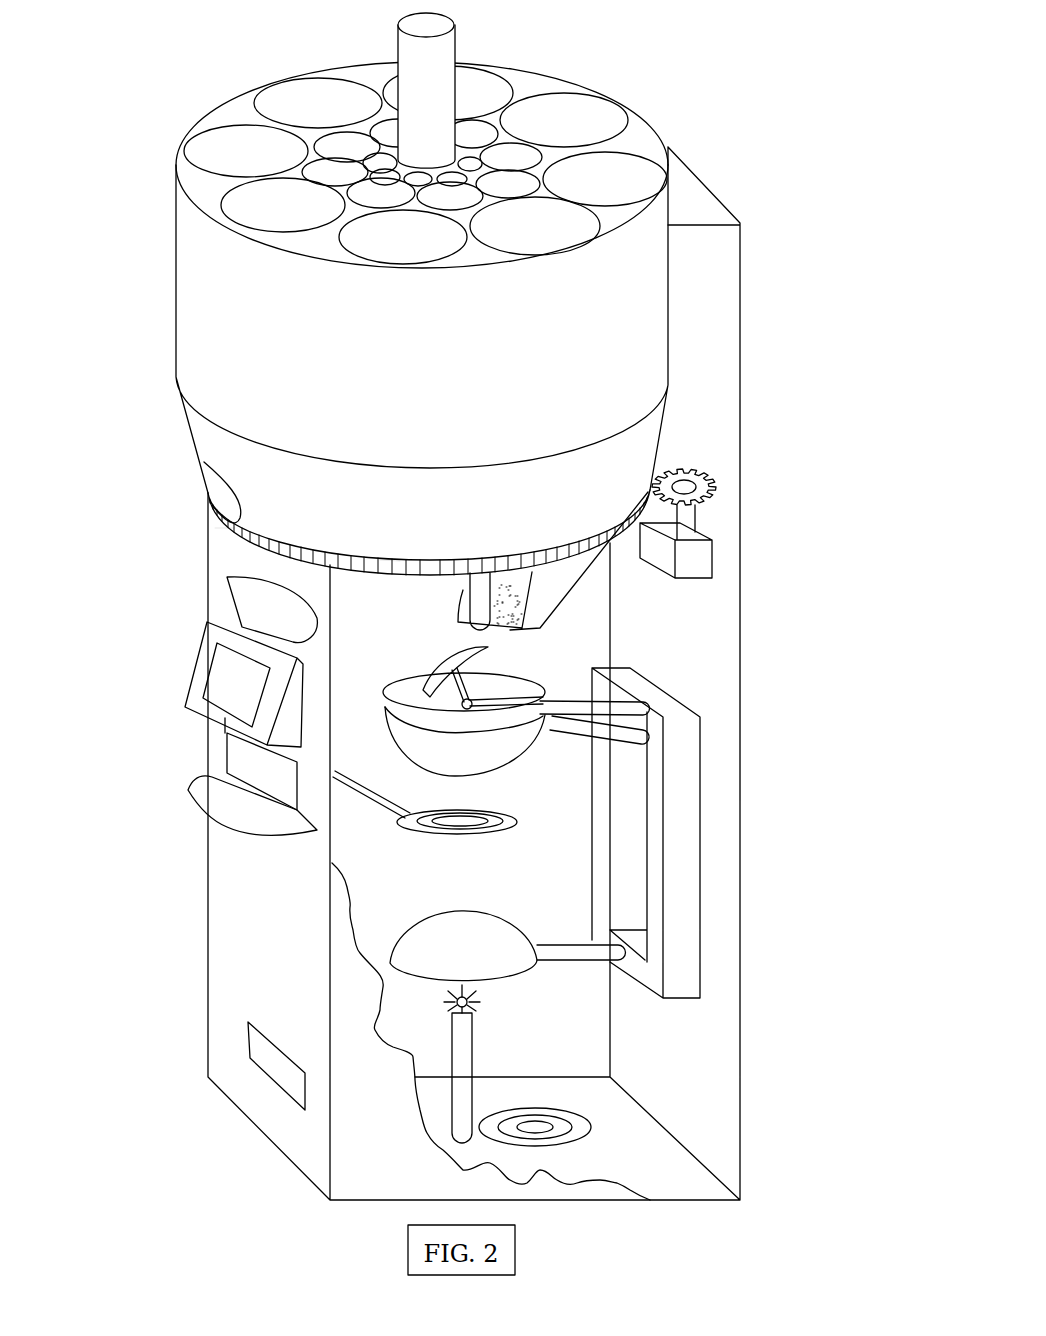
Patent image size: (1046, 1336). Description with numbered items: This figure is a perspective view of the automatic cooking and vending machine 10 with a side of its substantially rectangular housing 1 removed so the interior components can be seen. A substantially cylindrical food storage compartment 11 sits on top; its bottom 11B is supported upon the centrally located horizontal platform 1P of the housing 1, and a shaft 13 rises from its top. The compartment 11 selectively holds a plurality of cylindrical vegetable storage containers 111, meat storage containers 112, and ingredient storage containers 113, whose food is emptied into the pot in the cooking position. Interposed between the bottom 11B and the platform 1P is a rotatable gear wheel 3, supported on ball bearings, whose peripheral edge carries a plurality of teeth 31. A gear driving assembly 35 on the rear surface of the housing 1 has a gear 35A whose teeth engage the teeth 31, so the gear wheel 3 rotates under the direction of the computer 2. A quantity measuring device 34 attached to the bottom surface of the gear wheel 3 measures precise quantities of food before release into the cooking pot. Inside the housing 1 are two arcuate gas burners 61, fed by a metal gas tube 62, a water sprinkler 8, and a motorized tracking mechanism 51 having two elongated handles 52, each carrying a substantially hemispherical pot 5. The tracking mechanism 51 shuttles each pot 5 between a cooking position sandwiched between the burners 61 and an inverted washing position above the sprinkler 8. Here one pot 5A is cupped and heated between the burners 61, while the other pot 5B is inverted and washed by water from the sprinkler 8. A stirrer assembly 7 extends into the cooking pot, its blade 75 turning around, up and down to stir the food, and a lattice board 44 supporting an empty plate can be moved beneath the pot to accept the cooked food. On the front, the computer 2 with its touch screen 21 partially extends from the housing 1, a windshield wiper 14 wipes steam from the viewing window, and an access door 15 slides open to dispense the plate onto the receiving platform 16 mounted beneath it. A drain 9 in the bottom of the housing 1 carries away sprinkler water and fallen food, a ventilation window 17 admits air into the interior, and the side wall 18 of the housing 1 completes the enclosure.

The housing 1 is at (245, 921).
The horizontal platform 1P is at (227, 528).
The computer 2 is at (220, 672).
The rotatable gear wheel 3 is at (222, 522).
The hemispherical pot 5 is at (459, 857).
The pot in cooking position 5A is at (412, 690).
The pot in washing position 5B is at (430, 958).
The stirrer assembly 7 is at (498, 694).
The water sprinkler 8 is at (458, 1047).
The drain 9 is at (568, 1133).
The automatic cooking and vending machine 10 is at (162, 1160).
The food storage compartment 11 is at (451, 262).
The bottom of food storage compartment 11B is at (235, 492).
The rotary shaft 13 is at (438, 70).
The windshield wiper 14 is at (247, 613).
The access door 15 is at (243, 758).
The receiving platform 16 is at (230, 813).
The ventilation window 17 is at (258, 1052).
The side wall 18 is at (720, 612).
The touch screen 21 is at (225, 668).
The teeth 31 is at (392, 564).
The quantity measuring device 34 is at (533, 598).
The gear driving assembly 35 is at (733, 506).
The gear 35A is at (718, 480).
The lattice board 44 is at (470, 830).
The tracking mechanism 51 is at (683, 758).
The elongated handle 52 is at (584, 693).
The arcuate gas burner 61 is at (384, 710).
The metal gas tube 62 is at (553, 722).
The blade 75 is at (456, 668).
The vegetable storage container 111 is at (600, 122).
The meat storage container 112 is at (508, 157).
The ingredient storage container 113 is at (478, 177).